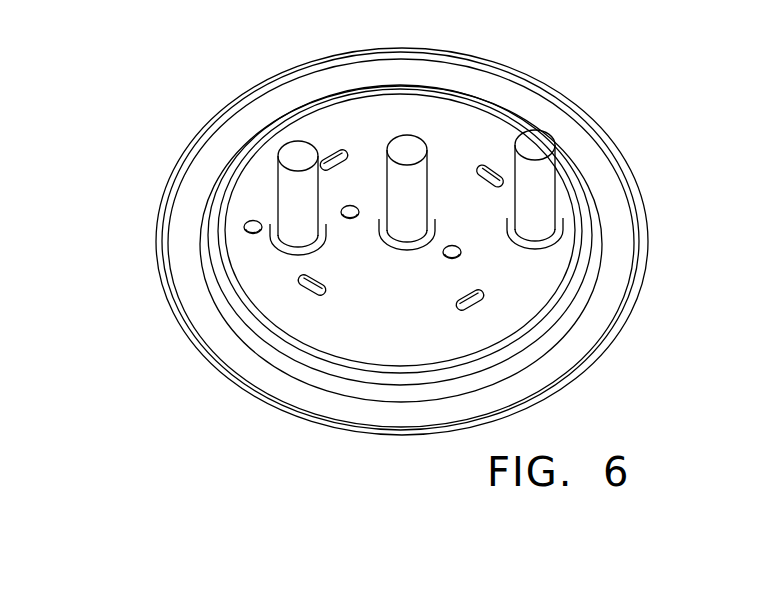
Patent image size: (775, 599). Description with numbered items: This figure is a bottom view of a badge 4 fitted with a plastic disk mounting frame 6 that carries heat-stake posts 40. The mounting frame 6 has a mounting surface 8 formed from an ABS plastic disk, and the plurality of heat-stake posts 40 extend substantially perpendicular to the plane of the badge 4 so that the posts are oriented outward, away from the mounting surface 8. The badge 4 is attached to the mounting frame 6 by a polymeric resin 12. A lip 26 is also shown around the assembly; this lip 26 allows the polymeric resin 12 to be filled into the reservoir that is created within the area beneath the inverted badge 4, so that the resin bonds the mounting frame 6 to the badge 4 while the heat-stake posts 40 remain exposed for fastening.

The badge 4 is at (628, 320).
The mounting frame 6 is at (262, 187).
The mounting surface 8 is at (305, 352).
The polymeric resin 12 is at (587, 235).
The lip 26 is at (627, 167).
The heat-stake posts 40 is at (302, 155).